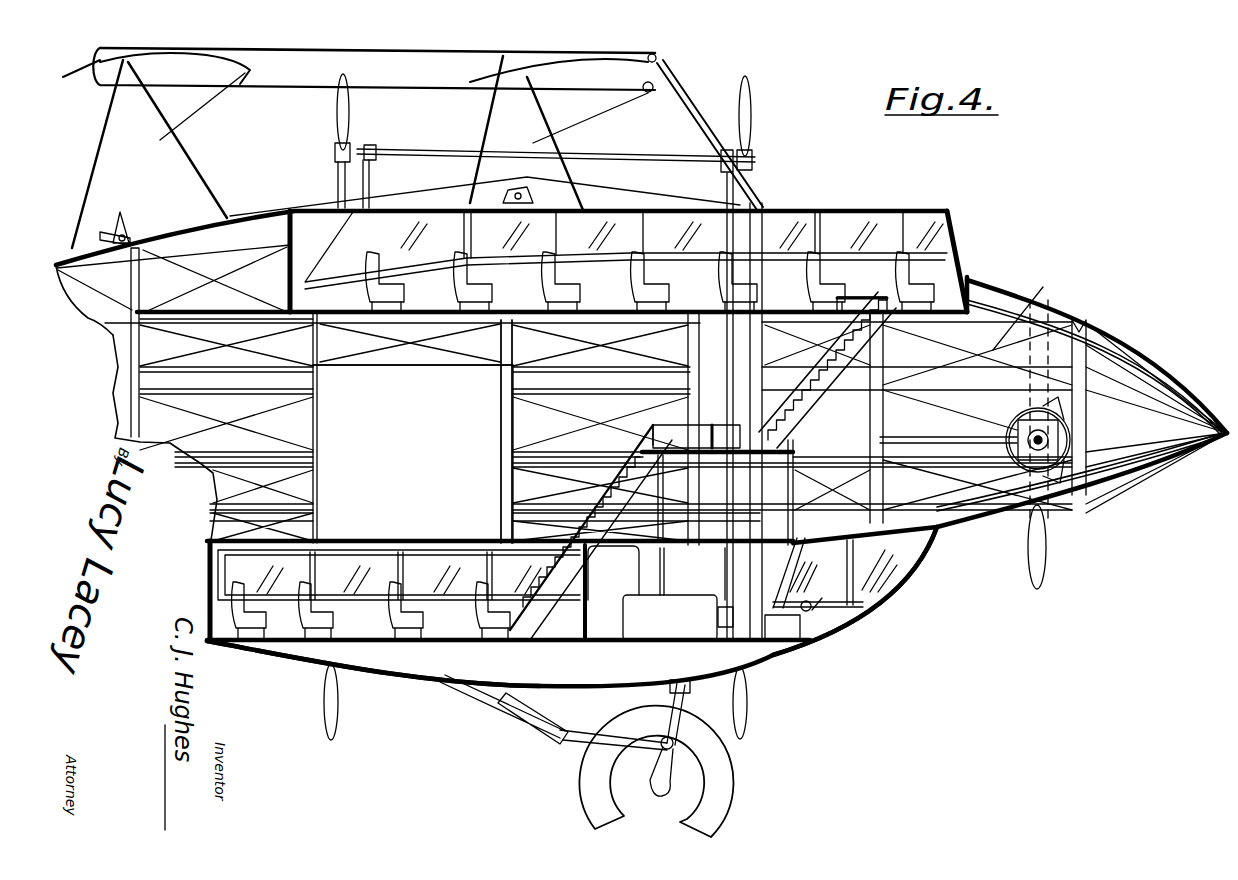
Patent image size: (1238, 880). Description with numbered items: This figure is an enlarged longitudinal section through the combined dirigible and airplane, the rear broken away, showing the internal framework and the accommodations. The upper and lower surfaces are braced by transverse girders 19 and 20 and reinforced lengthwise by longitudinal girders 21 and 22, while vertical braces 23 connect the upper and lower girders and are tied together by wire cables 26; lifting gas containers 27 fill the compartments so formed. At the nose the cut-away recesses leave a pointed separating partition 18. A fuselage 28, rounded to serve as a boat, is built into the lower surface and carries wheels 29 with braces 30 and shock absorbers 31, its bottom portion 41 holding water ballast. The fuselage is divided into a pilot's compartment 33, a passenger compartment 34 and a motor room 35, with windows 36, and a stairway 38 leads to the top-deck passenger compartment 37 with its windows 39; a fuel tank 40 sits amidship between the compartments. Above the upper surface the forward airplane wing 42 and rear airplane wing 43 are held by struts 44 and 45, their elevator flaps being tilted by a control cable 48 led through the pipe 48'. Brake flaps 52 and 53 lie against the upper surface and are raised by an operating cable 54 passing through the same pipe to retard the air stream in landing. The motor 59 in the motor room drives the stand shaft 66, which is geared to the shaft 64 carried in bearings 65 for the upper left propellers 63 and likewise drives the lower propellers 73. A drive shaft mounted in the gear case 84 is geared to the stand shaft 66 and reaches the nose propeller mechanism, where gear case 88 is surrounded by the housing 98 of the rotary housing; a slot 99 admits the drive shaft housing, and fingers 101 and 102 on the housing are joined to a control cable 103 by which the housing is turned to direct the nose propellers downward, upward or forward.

The pointed separating partition 18 is at (1158, 370).
The transverse girder 19 is at (153, 263).
The transverse girder 20 is at (1082, 510).
The longitudinal girder 21 is at (1030, 308).
The longitudinal girder 22 is at (292, 462).
The vertical brace 23 is at (140, 352).
The wire cable 26 is at (510, 423).
The lifting gas container 27 is at (215, 262).
The fuselage 28 is at (845, 625).
The wheel 29 is at (724, 786).
The wheel brace 30 is at (660, 743).
The shock absorber 31 is at (687, 695).
The pilot's compartment 33 is at (893, 583).
The passenger compartment 34 is at (378, 650).
The motor room 35 is at (607, 632).
The window 36 is at (372, 556).
The passenger compartment 37 is at (952, 264).
The stairway 38 is at (637, 437).
The window 39 is at (872, 210).
The fuel tank 40 is at (312, 416).
The bottom portion of fuselage 41 is at (520, 700).
The airplane wing 42 is at (598, 64).
The airplane wing 43 is at (200, 57).
The strut 44 is at (572, 132).
The strut 45 is at (110, 150).
The control cable 48 is at (374, 82).
The pipe 48' is at (743, 350).
The pivoted flap 52 is at (478, 190).
The pivoted flap 53 is at (118, 224).
The operating cable 54 is at (275, 208).
The motor 59 is at (695, 628).
The propeller 63 is at (337, 118).
The shaft 64 is at (480, 148).
The bearing 65 is at (376, 148).
The stand shaft 66 is at (726, 190).
The propeller 73 is at (338, 733).
The gear case 84 is at (718, 425).
The gear case 88 is at (1062, 445).
The housing 98 is at (1060, 427).
The slot 99 is at (1008, 443).
The finger 101 is at (1062, 405).
The finger 102 is at (1062, 470).
The control cable 103 is at (925, 412).